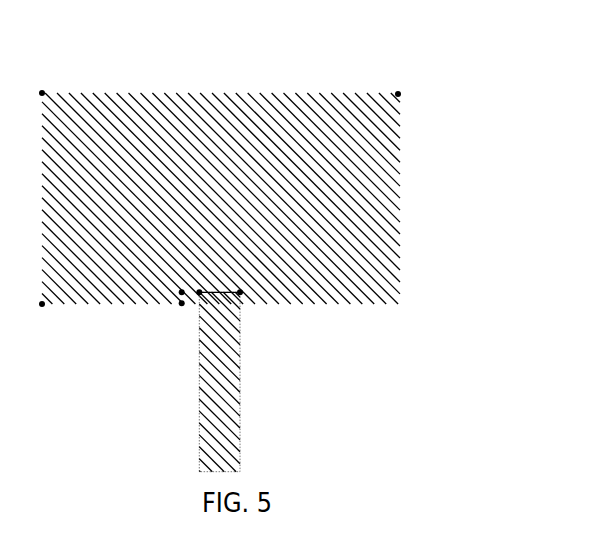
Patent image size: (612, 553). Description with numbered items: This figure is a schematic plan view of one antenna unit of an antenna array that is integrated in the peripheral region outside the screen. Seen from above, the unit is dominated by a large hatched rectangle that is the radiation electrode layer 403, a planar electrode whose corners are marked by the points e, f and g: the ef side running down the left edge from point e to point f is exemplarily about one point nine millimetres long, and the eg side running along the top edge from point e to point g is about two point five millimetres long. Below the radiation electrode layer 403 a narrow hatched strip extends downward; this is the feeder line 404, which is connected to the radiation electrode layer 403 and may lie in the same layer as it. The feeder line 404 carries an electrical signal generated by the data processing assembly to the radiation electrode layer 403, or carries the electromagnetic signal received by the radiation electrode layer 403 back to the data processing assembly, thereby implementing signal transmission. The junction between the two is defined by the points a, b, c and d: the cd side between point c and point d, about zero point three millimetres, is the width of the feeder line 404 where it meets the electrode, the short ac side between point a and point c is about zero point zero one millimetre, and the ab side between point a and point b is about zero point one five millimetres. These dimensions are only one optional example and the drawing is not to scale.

The radiation electrode layer 403 is at (398, 228).
The feeder line 404 is at (240, 408).
The point a is at (177, 284).
The point b is at (176, 313).
The point c is at (202, 284).
The point d is at (245, 284).
The point e is at (42, 93).
The point f is at (42, 304).
The point g is at (398, 94).